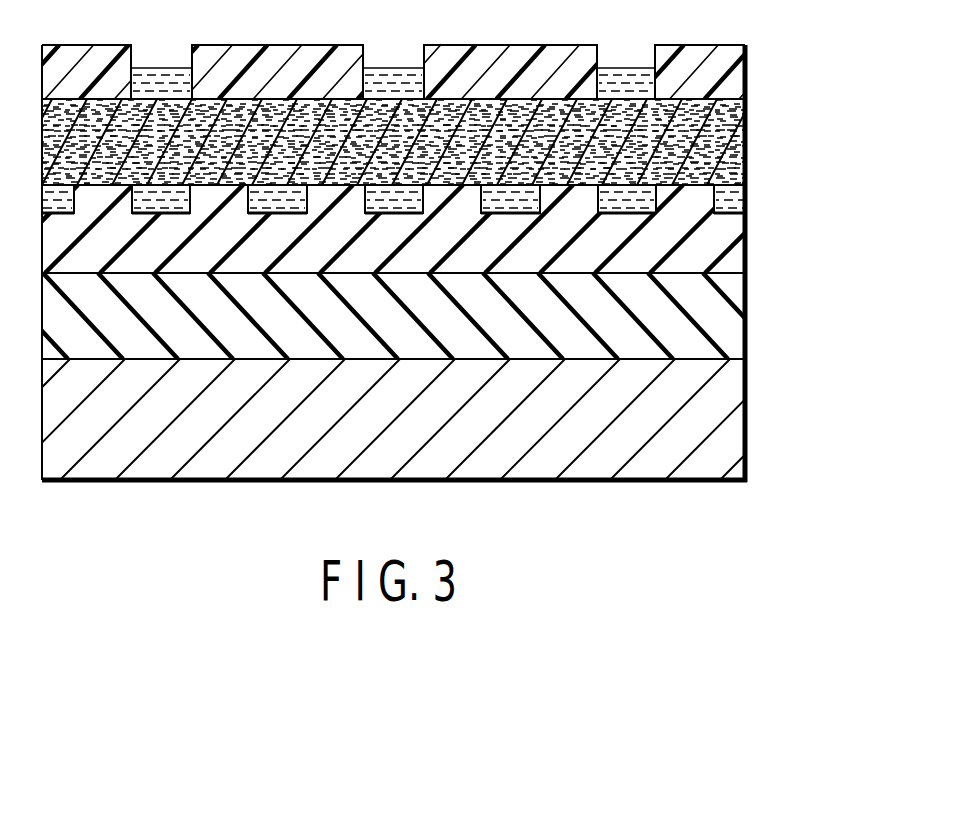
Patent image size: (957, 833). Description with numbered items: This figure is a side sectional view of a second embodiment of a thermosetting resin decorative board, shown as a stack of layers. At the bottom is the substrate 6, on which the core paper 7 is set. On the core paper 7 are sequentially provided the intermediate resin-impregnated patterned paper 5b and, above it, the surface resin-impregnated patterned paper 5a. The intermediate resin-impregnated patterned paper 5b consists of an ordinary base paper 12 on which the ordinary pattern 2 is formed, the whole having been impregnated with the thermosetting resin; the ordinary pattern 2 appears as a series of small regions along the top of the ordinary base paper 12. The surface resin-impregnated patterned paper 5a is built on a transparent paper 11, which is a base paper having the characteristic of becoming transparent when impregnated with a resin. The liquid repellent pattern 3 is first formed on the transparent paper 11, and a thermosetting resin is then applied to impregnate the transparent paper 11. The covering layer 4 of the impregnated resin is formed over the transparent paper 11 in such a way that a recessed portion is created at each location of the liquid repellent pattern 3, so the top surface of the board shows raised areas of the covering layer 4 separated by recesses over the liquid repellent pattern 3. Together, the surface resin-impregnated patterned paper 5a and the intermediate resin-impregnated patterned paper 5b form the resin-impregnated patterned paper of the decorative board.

The ordinary pattern 2 is at (742, 200).
The liquid repellent pattern 3 is at (633, 68).
The covering layer 4 is at (737, 72).
The surface resin-impregnated patterned paper 5a is at (435, 93).
The intermediate resin-impregnated patterned paper 5b is at (436, 229).
The substrate 6 is at (733, 423).
The core paper 7 is at (733, 322).
The transparent paper 11 is at (412, 142).
The ordinary base paper 12 is at (740, 240).